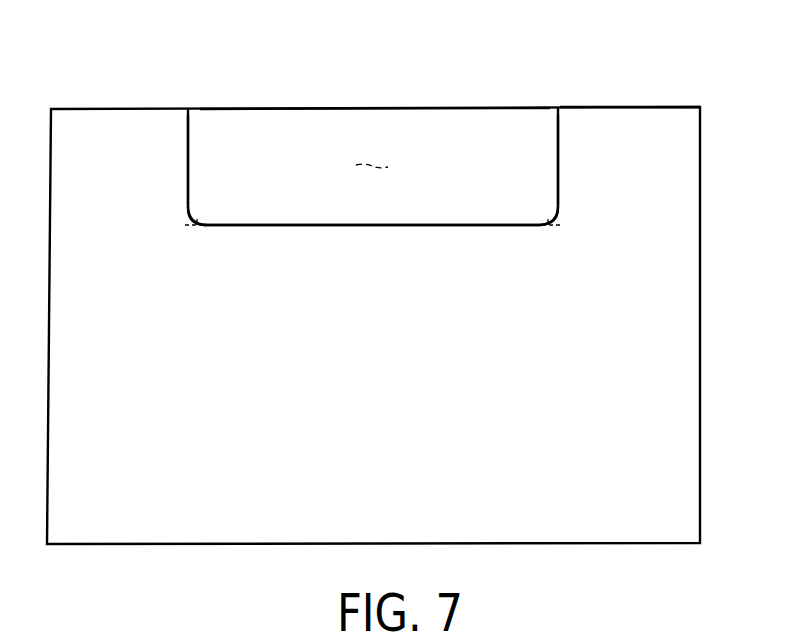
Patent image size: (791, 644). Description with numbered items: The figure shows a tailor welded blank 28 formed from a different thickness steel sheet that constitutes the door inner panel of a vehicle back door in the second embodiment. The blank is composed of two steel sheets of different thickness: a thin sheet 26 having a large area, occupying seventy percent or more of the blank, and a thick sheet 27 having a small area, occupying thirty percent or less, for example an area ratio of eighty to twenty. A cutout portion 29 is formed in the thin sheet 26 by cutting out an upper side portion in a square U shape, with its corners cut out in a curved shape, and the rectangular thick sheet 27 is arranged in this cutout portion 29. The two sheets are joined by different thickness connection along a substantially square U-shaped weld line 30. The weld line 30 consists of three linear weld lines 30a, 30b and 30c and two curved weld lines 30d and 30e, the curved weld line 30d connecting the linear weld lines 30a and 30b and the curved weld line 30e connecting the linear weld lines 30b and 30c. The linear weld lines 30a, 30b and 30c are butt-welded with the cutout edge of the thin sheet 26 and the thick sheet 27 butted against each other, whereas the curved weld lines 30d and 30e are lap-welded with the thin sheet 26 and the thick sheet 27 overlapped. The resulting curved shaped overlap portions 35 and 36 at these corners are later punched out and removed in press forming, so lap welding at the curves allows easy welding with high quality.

The thin sheet 26 is at (701, 322).
The thick sheet 27 is at (443, 122).
The tailor welded blank 28 is at (640, 82).
The cutout portion 29 is at (372, 165).
The weld line 30 is at (186, 139).
The linear weld line 30a is at (559, 142).
The linear weld line 30b is at (371, 226).
The linear weld line 30c is at (188, 172).
The curved weld line 30d is at (553, 216).
The curved weld line 30e is at (187, 222).
The curved shaped overlap portion 35 is at (548, 226).
The curved shaped overlap portion 36 is at (197, 226).